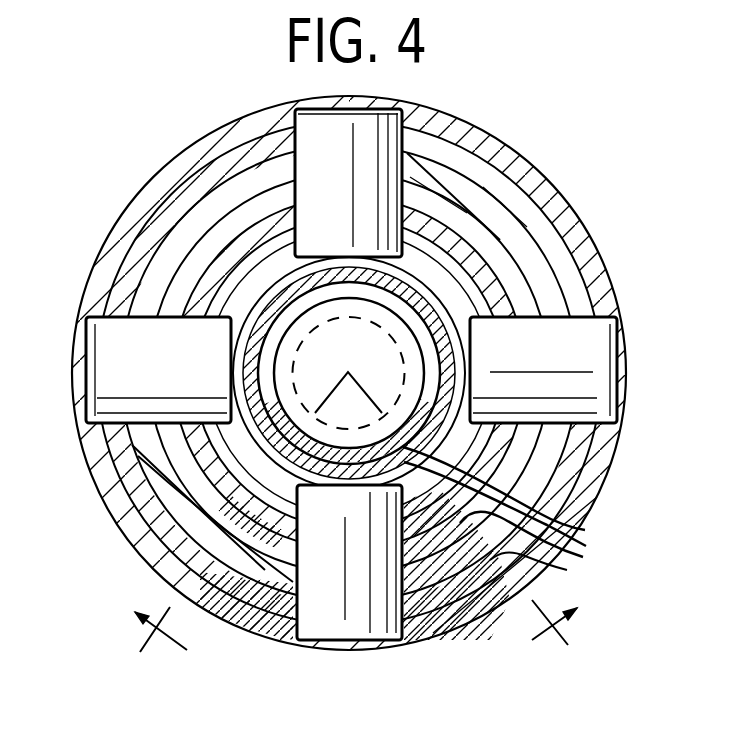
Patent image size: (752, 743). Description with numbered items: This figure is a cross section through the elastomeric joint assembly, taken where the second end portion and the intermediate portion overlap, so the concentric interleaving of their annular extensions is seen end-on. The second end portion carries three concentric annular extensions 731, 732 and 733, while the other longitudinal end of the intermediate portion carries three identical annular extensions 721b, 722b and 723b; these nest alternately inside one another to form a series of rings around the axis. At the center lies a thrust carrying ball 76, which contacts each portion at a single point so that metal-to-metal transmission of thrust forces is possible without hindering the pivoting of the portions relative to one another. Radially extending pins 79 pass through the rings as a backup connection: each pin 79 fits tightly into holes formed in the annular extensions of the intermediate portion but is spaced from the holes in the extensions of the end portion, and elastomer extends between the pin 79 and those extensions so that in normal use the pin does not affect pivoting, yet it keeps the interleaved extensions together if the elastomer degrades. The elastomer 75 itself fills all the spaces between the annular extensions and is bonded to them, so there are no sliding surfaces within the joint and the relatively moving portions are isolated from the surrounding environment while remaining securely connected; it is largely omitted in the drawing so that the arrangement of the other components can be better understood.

The annular extension 731 is at (460, 133).
The annular extension 732 is at (455, 247).
The annular extension 733 is at (433, 317).
The annular extension 721b is at (236, 198).
The annular extension 722b is at (263, 280).
The annular extension 723b is at (290, 347).
The pin 79 is at (337, 185).
The ball 76 is at (366, 357).
The elastomer 75 is at (575, 535).